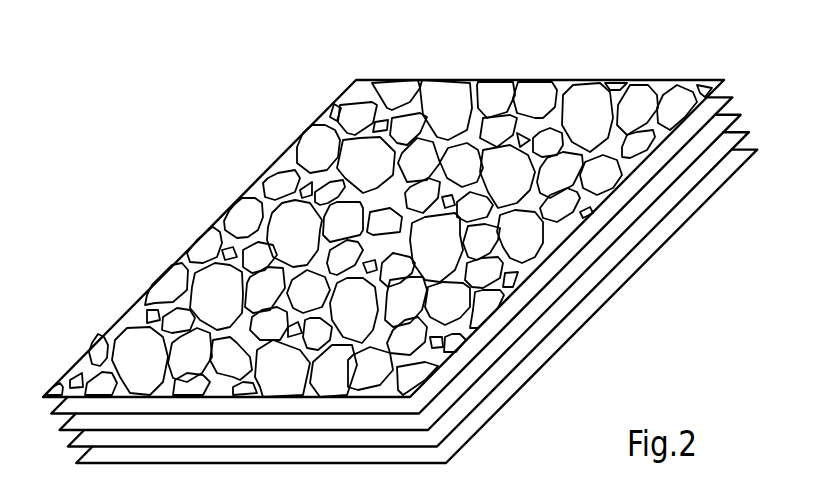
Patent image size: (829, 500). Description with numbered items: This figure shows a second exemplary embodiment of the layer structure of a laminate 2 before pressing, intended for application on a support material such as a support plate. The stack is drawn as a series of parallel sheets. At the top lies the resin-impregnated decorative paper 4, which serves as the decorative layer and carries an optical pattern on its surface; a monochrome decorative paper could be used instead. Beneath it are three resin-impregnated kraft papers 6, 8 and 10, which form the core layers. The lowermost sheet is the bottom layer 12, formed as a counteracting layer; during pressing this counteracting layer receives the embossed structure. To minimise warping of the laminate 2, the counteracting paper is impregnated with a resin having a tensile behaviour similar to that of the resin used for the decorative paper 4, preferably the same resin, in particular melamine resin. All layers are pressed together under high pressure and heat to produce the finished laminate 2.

The laminate 2 is at (287, 86).
The resin-impregnated decorative paper 4 is at (670, 79).
The resin-impregnated kraft paper 6 is at (723, 98).
The resin-impregnated kraft paper 8 is at (693, 162).
The resin-impregnated kraft paper 10 is at (680, 202).
The bottom layer 12 is at (655, 252).